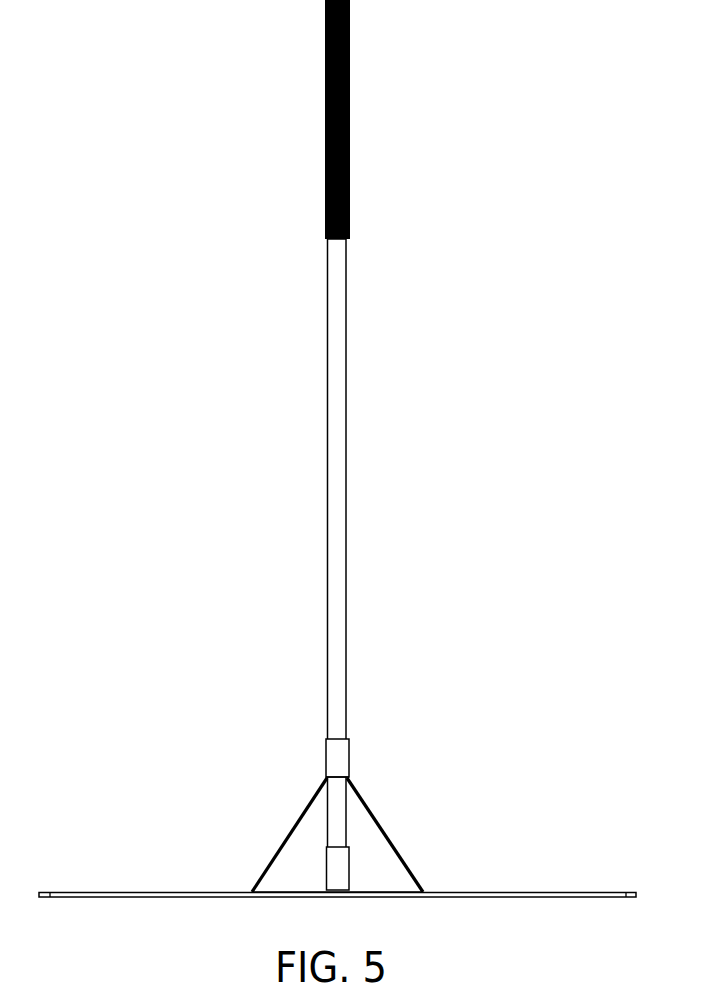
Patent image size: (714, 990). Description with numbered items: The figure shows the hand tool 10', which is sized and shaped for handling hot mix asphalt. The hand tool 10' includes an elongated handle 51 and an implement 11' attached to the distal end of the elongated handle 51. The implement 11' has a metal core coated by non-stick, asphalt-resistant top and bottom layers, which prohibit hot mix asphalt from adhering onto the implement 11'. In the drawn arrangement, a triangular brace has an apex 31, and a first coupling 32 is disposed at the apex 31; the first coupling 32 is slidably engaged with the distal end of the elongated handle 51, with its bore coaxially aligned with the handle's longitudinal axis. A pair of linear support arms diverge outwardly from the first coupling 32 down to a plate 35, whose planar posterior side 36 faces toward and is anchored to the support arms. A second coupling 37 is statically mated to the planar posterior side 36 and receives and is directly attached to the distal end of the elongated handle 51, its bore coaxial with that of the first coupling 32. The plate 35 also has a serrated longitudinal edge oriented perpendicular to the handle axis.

The hand tool 10' is at (234, 121).
The elongated handle 51 is at (338, 498).
The implement 11' is at (411, 818).
The first coupling 32 is at (335, 752).
The apex 31 is at (332, 777).
The planar posterior side 36 is at (313, 892).
The second coupling 37 is at (335, 870).
The plate 35 is at (105, 900).